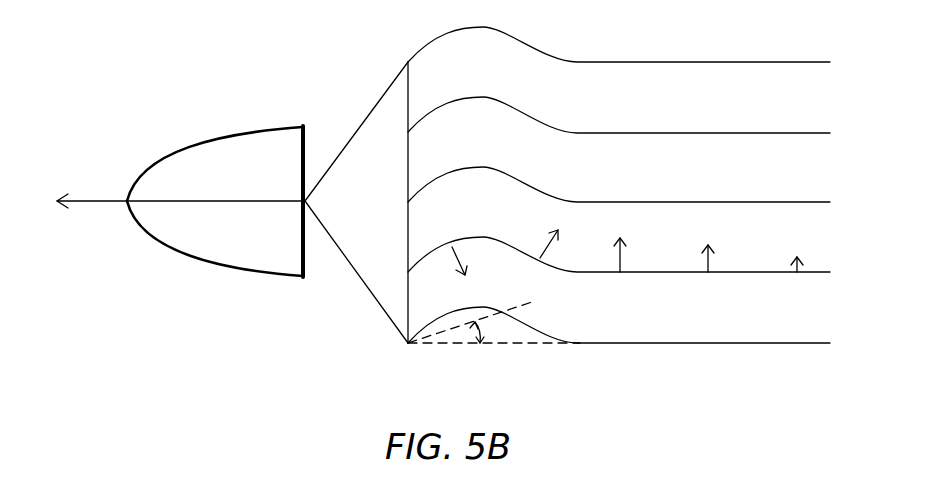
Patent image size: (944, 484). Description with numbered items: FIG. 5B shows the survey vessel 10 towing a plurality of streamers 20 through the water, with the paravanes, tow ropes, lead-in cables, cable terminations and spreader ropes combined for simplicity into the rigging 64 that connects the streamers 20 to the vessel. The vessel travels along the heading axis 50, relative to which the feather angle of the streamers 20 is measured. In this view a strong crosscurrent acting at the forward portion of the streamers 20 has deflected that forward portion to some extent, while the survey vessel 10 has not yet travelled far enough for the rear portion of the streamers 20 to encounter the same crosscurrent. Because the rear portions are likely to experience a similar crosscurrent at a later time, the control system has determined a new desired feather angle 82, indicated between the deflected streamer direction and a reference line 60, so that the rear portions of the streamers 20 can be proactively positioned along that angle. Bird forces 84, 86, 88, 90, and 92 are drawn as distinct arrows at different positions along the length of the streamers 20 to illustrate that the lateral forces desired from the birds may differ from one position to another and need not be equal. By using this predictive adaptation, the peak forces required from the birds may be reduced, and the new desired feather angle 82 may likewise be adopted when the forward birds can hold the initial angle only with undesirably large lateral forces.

The survey vessel 10 is at (199, 139).
The heading axis 50 is at (100, 205).
The rigging 64 is at (370, 111).
The streamers 20 is at (727, 60).
The free-stream reference line 60 is at (497, 347).
The new desired feather angle 82 is at (470, 332).
The bird force 84 is at (462, 262).
The bird force 86 is at (543, 243).
The bird force 88 is at (622, 262).
The bird force 90 is at (710, 260).
The bird force 92 is at (800, 268).